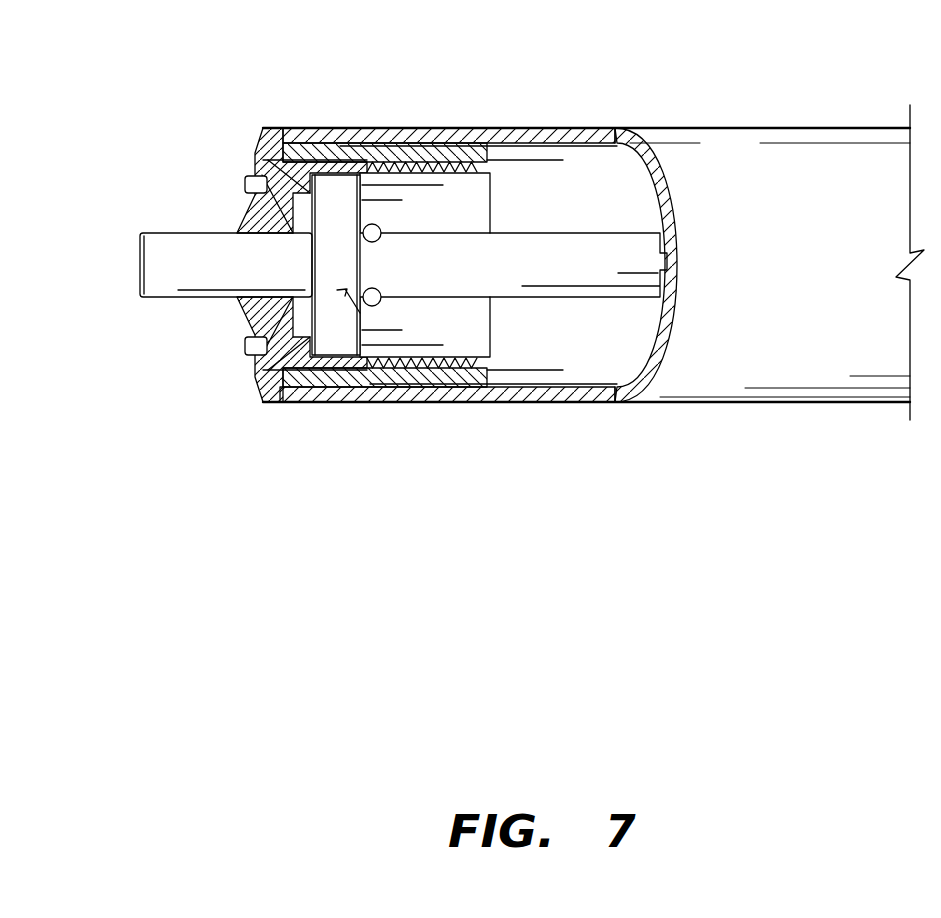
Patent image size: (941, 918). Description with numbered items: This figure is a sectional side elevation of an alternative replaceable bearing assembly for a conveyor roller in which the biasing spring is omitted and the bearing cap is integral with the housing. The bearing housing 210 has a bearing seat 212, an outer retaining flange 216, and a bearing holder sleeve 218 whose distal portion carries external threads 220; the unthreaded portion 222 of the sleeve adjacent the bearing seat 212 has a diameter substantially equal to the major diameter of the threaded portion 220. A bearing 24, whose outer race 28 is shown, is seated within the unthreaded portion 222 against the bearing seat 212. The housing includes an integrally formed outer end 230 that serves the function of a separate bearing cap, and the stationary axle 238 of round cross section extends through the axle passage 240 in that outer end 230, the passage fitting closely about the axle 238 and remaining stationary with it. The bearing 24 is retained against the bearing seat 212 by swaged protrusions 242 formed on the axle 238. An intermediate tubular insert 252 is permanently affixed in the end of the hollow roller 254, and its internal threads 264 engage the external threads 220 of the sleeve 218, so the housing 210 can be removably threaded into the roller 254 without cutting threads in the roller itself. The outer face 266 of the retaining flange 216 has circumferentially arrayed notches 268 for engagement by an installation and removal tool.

The bearing housing 210 is at (303, 143).
The bearing seat 212 is at (315, 185).
The outer retaining flange 216 is at (262, 137).
The bearing holder sleeve 218 is at (330, 143).
The externally threaded distal portion 220 is at (474, 165).
The unthreaded portion 222 is at (322, 404).
The outer end 230 is at (240, 305).
The axle 238 is at (578, 275).
The axle passage 240 is at (268, 235).
The swaged protrusions 242 is at (381, 236).
The insert 252 is at (295, 404).
The roller 254 is at (754, 128).
The internal threads 264 is at (463, 170).
The outer face 266 is at (243, 232).
The notches 268 is at (245, 185).
The bearing 24 is at (390, 330).
The outer race 28 is at (362, 303).